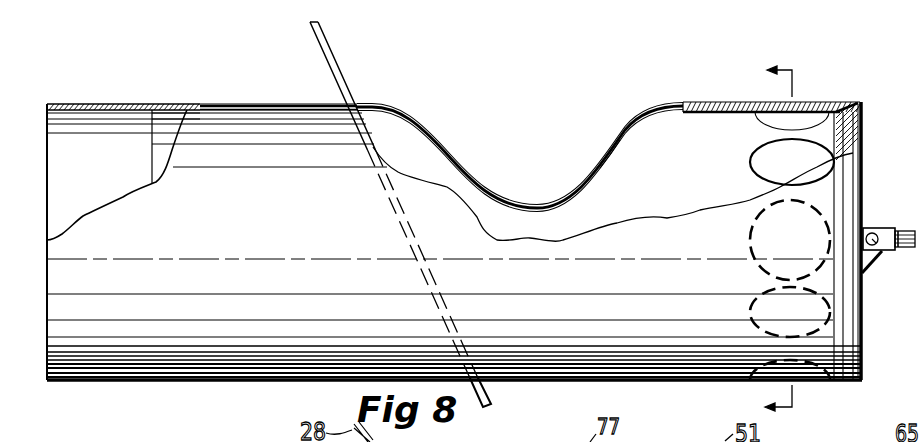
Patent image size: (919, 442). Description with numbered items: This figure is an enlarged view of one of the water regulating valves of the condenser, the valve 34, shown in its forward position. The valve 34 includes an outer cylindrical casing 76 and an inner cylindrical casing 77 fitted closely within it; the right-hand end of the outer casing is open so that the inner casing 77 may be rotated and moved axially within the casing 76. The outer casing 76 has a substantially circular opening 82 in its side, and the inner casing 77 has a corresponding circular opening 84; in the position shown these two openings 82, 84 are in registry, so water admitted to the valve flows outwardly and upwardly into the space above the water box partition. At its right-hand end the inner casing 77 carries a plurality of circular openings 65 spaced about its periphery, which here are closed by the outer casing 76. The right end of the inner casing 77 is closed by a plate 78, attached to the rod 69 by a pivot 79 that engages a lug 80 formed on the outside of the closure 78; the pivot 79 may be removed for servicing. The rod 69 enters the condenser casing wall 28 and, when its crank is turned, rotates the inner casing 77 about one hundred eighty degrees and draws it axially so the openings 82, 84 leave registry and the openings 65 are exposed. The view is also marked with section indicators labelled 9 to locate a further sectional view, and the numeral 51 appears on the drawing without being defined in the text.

The valve 34 is at (233, 418).
The liner 51 is at (187, 110).
The circular opening 82 is at (627, 130).
The circular opening 84 is at (614, 156).
The outer cylindrical casing 76 is at (740, 102).
The inner cylindrical casing 77 is at (727, 114).
The circular openings 65 is at (752, 177).
The plate 78 is at (864, 175).
The lug 80 is at (866, 227).
The rod 69 is at (880, 252).
The pivot 79 is at (883, 283).
The casing wall 28 is at (330, 62).
The section line 9- 9 is at (786, 237).